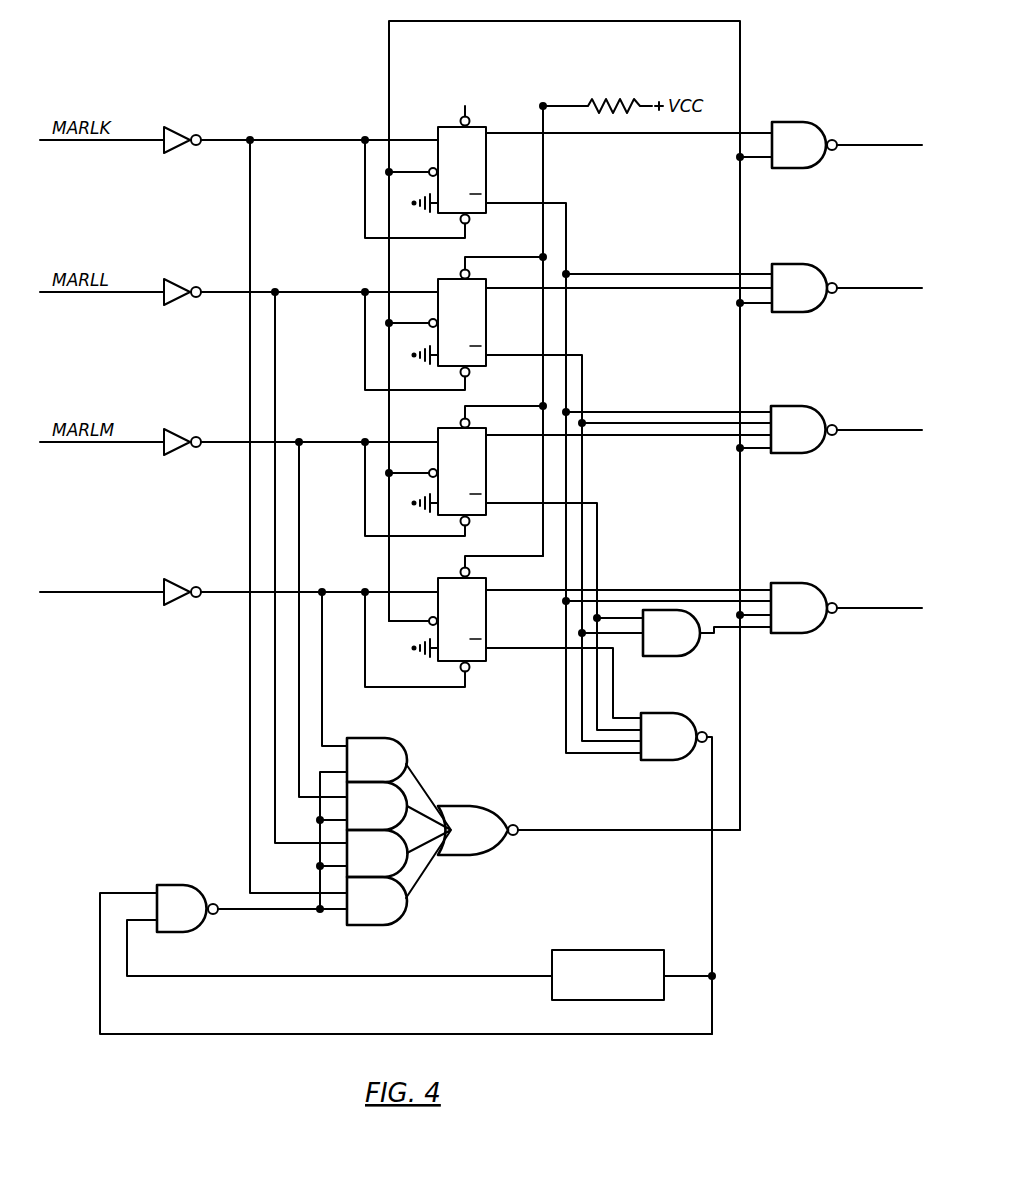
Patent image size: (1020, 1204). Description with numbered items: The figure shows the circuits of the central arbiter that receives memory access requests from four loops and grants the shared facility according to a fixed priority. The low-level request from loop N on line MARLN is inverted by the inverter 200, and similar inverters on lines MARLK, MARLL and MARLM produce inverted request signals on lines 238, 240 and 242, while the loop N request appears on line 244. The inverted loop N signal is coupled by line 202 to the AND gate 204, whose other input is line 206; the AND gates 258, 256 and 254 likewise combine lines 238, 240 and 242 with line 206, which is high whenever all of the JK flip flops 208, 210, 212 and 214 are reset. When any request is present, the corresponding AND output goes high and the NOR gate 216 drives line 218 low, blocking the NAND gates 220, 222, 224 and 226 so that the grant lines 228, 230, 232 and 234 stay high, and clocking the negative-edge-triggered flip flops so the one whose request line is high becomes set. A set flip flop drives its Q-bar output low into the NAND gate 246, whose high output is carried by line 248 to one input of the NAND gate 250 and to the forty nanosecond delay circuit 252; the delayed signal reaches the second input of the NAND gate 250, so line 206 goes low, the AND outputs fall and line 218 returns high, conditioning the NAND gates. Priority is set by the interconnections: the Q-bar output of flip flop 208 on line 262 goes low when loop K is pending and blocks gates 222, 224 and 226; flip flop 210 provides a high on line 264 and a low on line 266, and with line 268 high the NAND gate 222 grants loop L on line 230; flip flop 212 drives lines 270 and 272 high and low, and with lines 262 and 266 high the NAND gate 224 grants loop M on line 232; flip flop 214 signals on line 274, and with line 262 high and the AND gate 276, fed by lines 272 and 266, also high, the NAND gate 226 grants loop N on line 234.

The inverter 200 is at (176, 583).
The line 202 is at (322, 727).
The AND gate 204 is at (396, 749).
The line 206 is at (291, 915).
The JK flip flop 208 is at (488, 163).
The JK flip flop 210 is at (489, 314).
The JK flip flop 212 is at (489, 464).
The JK flip flop 214 is at (489, 620).
The NOR gate 216 is at (492, 813).
The line 218 is at (740, 763).
The NAND gate 220 is at (793, 122).
The NAND gate 222 is at (793, 264).
The NAND gate 224 is at (793, 406).
The NAND gate 226 is at (793, 583).
The line 228 is at (893, 150).
The line 230 is at (893, 294).
The line 232 is at (893, 436).
The line 234 is at (893, 614).
The line 238 is at (328, 137).
The line 240 is at (336, 289).
The line 242 is at (336, 439).
The line 244 is at (356, 589).
The NAND gate 246 is at (670, 712).
The line 248 is at (712, 905).
The NAND gate 250 is at (182, 885).
The delay circuit 252 is at (610, 950).
The AND gate 254 is at (377, 806).
The AND gate 256 is at (377, 853).
The AND gate 258 is at (377, 901).
The line 262 is at (563, 203).
The line 264 is at (636, 290).
The line 266 is at (583, 356).
The line 268 is at (707, 273).
The line 270 is at (690, 438).
The line 272 is at (598, 531).
The line 274 is at (700, 566).
The AND gate 276 is at (668, 657).